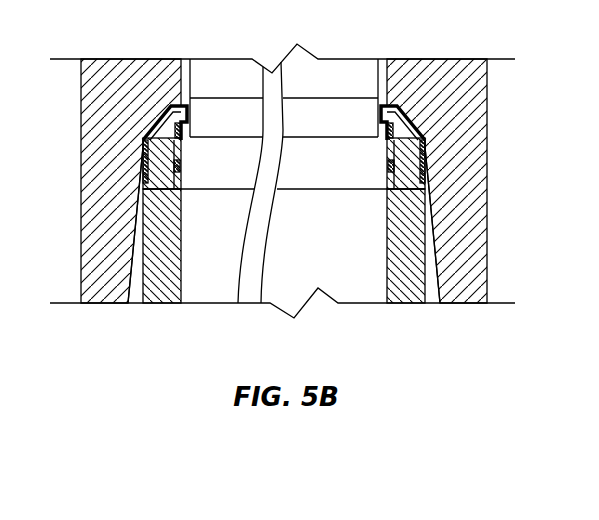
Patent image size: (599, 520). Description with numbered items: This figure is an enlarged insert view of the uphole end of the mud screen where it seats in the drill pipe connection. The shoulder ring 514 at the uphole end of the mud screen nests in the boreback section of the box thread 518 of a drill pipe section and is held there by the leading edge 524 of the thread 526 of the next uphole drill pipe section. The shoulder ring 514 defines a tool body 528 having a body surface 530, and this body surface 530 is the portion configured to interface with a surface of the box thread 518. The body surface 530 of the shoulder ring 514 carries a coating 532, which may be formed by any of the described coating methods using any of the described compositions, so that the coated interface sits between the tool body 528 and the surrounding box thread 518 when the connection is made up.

The shoulder ring 514 is at (150, 183).
The box thread 518 is at (92, 255).
The leading edge 524 is at (166, 197).
The thread 526 is at (160, 284).
The tool body 528 is at (157, 142).
The body surface 530 is at (156, 120).
The coating 532 is at (189, 112).